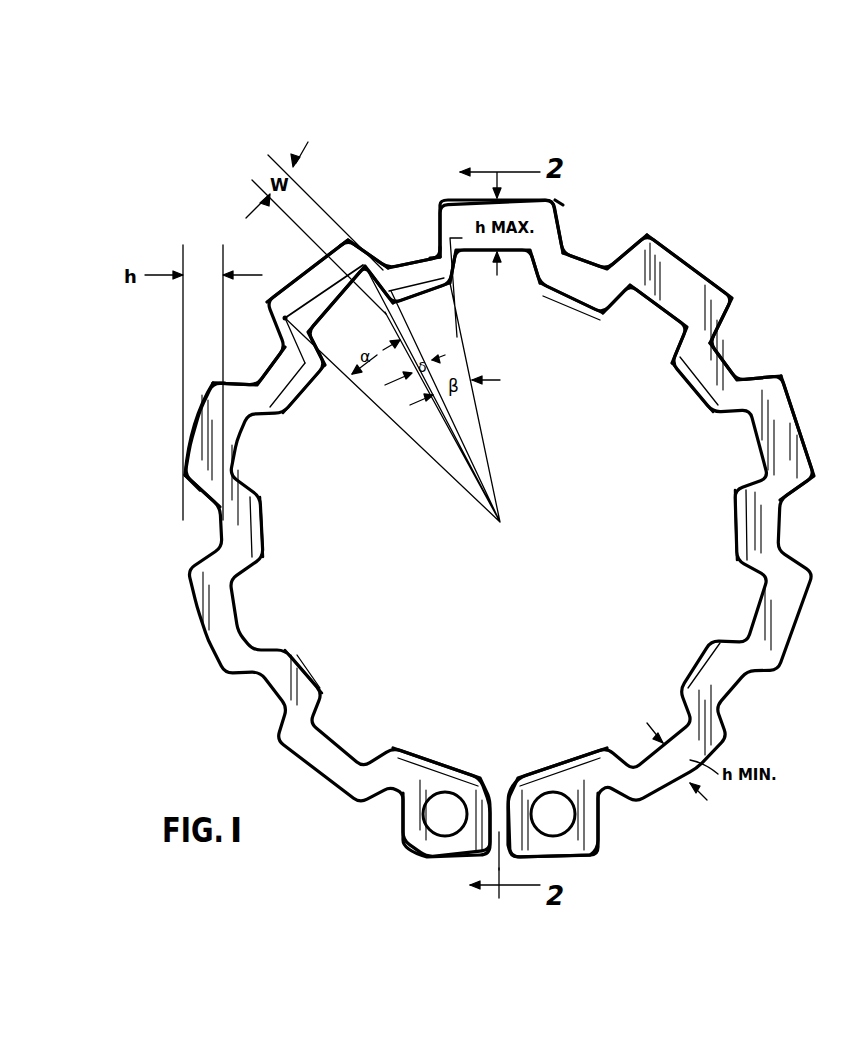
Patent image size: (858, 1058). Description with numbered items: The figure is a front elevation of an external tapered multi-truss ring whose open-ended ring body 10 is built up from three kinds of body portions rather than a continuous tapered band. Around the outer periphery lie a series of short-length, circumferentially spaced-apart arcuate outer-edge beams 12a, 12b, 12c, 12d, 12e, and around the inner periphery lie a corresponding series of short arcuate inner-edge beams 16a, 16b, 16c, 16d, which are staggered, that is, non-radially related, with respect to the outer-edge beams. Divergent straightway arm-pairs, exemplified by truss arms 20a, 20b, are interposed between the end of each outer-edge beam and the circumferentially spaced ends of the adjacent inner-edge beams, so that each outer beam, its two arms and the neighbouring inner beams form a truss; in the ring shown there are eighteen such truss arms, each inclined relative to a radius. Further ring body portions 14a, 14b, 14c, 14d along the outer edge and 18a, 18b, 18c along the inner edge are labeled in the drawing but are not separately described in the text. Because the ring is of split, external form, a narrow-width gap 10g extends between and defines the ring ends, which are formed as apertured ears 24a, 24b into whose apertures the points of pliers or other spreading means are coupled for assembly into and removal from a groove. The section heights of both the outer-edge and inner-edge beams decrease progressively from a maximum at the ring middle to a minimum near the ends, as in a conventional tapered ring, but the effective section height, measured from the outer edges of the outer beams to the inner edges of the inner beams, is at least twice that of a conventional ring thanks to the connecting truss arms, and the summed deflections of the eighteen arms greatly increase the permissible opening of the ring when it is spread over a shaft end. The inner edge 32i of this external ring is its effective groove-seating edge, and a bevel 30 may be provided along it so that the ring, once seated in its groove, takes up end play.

The ring body 10 is at (205, 647).
The gap 10g is at (497, 836).
The outer-edge beam 12a is at (560, 215).
The outer-edge beam 12b is at (298, 277).
The outer-edge beam 12c is at (690, 270).
The outer-edge beam 12d is at (192, 432).
The outer-edge beam 12e is at (792, 410).
The outer connecting section 14a is at (392, 253).
The outer connecting section 14b is at (604, 248).
The outer connecting section 14c is at (260, 366).
The outer connecting section 14d is at (740, 350).
The inner-edge beam 16a is at (416, 279).
The inner-edge beam 16b is at (575, 295).
The inner-edge beam 16c is at (306, 395).
The inner-edge beam 16d is at (702, 392).
The inner lug surface 18a is at (513, 268).
The inner lug surface 18b is at (358, 332).
The inner lug surface 18c is at (651, 314).
The truss arm 20a is at (441, 244).
The truss arm 20b is at (370, 250).
The apertured ear 24a is at (415, 848).
The apertured ear 24b is at (580, 850).
The bevel 30 is at (298, 672).
The inner edge 32i is at (266, 522).